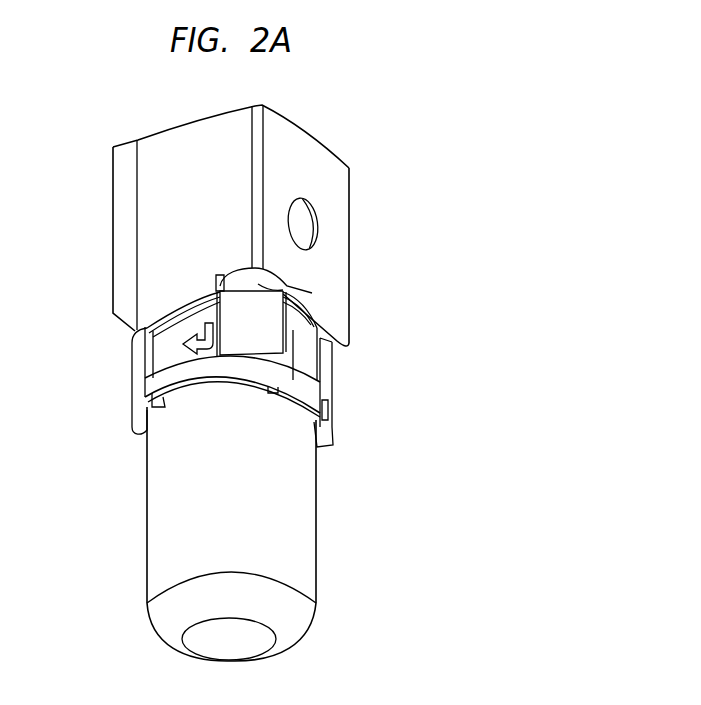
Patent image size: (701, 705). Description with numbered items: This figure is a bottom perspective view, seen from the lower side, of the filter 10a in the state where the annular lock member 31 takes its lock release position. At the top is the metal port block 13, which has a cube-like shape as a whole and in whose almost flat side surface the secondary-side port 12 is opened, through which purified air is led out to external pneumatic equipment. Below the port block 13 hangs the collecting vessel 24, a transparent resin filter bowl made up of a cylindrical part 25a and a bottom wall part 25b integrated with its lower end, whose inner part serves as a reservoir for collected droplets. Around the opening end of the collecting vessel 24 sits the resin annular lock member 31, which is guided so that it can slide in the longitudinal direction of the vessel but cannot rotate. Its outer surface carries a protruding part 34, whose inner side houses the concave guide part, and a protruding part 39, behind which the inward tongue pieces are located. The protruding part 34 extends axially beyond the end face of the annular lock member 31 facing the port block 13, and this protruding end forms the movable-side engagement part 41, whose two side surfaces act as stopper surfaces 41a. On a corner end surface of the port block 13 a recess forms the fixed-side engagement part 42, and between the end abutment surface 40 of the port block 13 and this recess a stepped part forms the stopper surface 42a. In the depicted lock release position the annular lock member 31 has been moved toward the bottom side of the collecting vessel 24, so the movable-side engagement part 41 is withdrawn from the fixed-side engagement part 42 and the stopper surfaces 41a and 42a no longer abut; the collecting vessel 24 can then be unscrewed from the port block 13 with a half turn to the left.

The filter 10a is at (378, 183).
The secondary-side port 12 is at (305, 228).
The port block 13 is at (320, 282).
The collecting vessel 24 is at (269, 534).
The cylindrical part 25a is at (273, 525).
The bottom wall part 25b is at (237, 640).
The annular lock member 31 is at (338, 412).
The protruding part 34 is at (260, 361).
The protruding part 39 is at (147, 378).
The end abutment surface 40 is at (338, 343).
The movable-side engagement part 41 is at (243, 270).
The stopper surface 41a is at (216, 298).
The fixed-side engagement part 42 is at (287, 288).
The stopper surface 42a is at (216, 280).